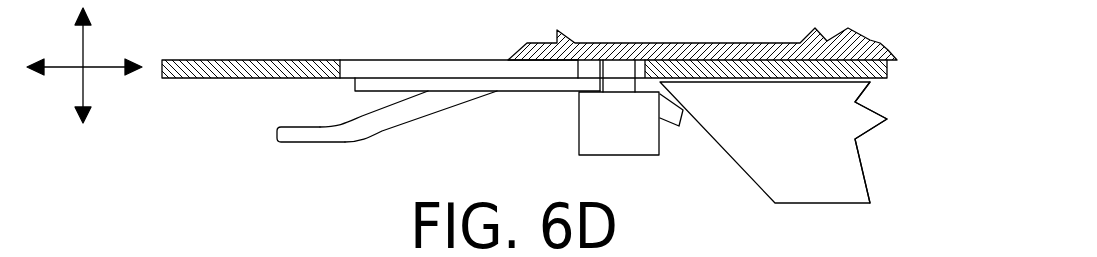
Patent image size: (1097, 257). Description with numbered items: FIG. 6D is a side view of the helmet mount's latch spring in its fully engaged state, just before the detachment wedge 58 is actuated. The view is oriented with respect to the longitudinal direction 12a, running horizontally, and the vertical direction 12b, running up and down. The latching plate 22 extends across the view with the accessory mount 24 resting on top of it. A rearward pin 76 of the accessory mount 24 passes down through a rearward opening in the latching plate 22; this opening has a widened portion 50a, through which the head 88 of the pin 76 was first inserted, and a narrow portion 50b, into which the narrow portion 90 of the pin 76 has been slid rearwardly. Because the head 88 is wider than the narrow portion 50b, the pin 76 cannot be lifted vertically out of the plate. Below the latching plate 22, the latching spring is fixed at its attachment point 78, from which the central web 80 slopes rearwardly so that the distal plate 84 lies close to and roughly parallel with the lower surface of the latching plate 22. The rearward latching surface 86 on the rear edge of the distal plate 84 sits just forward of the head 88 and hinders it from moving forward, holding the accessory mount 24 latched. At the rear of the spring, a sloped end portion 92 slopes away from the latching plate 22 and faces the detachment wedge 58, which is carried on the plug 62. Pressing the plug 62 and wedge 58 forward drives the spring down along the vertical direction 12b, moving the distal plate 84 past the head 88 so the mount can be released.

The longitudinal direction 12a is at (110, 65).
The vertical direction 12b is at (85, 38).
The latching plate 22 is at (217, 60).
The accessory mount 24 is at (753, 43).
The widened portion 50a is at (398, 70).
The narrow portion 50b is at (593, 70).
The detachment wedge 58 is at (717, 142).
The plug 62 is at (840, 180).
The rearward pin 76 is at (556, 150).
The attachment point 78 is at (300, 130).
The central web 80 is at (408, 123).
The distal plate 84 is at (386, 87).
The rearward latching surface 86 is at (597, 82).
The head 88 is at (622, 140).
The narrow portion 90 is at (618, 68).
The sloped end portion 92 is at (675, 115).